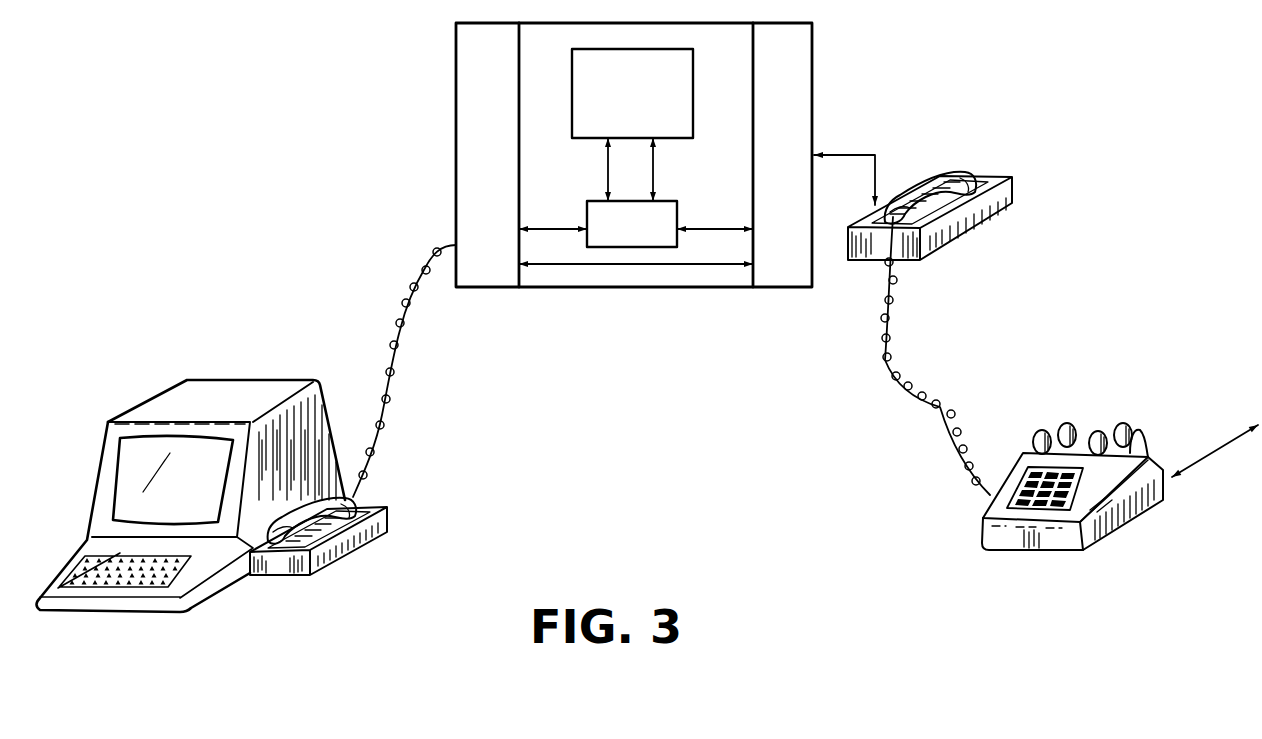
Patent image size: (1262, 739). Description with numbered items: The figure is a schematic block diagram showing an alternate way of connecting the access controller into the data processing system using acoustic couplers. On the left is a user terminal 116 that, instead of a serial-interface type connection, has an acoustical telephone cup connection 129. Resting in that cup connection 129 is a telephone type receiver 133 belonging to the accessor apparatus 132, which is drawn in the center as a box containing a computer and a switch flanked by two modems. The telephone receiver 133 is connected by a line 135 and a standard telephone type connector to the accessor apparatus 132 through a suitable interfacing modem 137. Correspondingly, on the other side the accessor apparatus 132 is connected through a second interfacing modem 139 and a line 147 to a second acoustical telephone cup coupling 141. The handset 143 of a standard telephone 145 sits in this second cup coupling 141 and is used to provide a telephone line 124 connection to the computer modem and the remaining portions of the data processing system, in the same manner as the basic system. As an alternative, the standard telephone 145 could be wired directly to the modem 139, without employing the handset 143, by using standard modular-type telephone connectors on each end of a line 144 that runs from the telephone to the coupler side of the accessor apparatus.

The user terminal 116 is at (165, 403).
The telephone line 124 is at (1212, 452).
The acoustical telephone cup connection 129 is at (340, 549).
The accessor apparatus 132 is at (630, 288).
The telephone type receiver 133 is at (293, 520).
The line 135 is at (407, 328).
The interfacing modem 137 is at (478, 282).
The interfacing modem 139 is at (775, 281).
The second acoustical telephone cup coupling 141 is at (1000, 198).
The handset 143 is at (924, 184).
The line 144 is at (941, 405).
The standard telephone 145 is at (1120, 512).
The line 147 is at (855, 155).